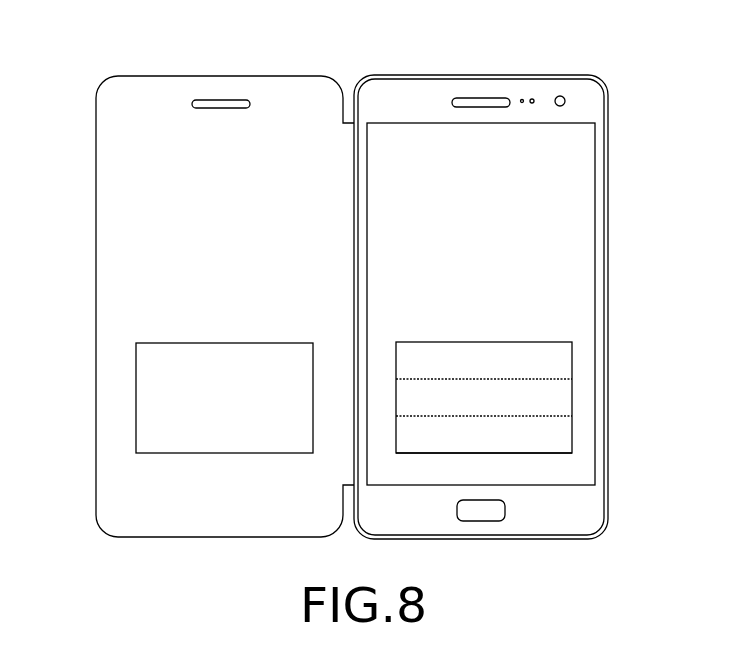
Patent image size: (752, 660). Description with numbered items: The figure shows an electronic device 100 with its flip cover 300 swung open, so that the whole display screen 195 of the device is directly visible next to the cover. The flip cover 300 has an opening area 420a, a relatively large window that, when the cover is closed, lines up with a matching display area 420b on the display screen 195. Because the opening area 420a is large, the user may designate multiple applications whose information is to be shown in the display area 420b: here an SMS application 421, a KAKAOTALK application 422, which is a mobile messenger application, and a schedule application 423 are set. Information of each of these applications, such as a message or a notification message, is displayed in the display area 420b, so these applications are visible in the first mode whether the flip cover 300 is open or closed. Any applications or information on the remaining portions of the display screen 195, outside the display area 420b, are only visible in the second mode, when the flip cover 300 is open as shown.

The flip cover 300 is at (218, 76).
The electronic device 100 is at (478, 75).
The display screen 195 is at (560, 190).
The opening area 420a is at (136, 418).
The display area 420b is at (483, 342).
The SMS application 421 is at (558, 363).
The KAKAOTALK application 422 is at (558, 398).
The schedule application 423 is at (558, 435).